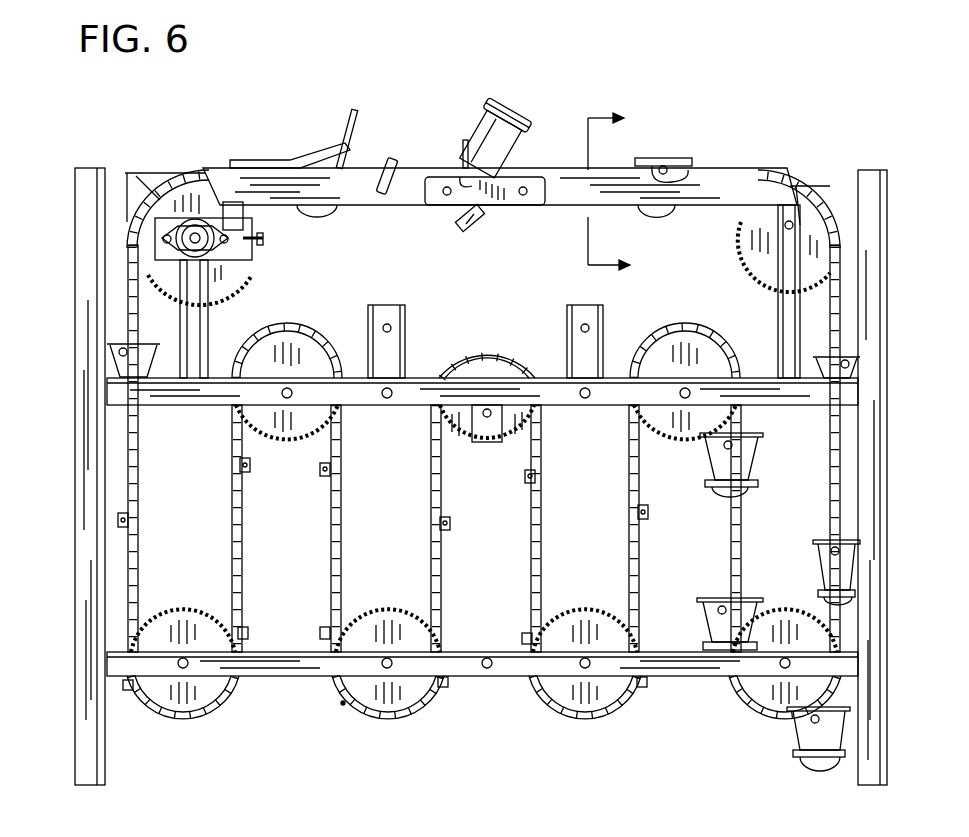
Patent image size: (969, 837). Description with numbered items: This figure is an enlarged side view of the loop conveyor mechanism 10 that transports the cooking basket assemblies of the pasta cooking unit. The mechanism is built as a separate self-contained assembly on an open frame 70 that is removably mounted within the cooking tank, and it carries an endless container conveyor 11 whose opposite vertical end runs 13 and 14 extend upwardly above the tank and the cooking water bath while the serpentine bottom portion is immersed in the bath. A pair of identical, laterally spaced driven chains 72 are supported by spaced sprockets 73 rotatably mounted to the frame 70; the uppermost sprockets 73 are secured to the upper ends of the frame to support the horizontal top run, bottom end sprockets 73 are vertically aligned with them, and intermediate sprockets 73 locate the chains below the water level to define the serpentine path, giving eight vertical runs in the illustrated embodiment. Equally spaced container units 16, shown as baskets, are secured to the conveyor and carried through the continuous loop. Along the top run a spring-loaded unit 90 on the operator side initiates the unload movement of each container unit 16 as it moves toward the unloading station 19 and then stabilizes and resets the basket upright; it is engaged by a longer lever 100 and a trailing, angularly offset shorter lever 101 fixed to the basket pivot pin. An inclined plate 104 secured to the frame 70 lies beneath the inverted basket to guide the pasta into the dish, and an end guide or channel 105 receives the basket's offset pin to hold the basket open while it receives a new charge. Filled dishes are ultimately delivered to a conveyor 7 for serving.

The conveyor 7 is at (615, 187).
The loop conveyor mechanism 10 is at (55, 643).
The endless container conveyor 11 is at (342, 704).
The vertical end run 13 is at (139, 490).
The vertical end run 14 is at (831, 487).
The container unit 16 is at (141, 168).
The unloading station 19 is at (482, 274).
The frame 70 is at (508, 676).
The driven chains 72 is at (341, 583).
The sprockets 73 is at (239, 272).
The spring-loaded unit 90 is at (413, 160).
The longer lever 100 is at (697, 197).
The shorter lever 101 is at (668, 183).
The inclined plate 104 is at (486, 219).
The end guide 105 is at (362, 118).